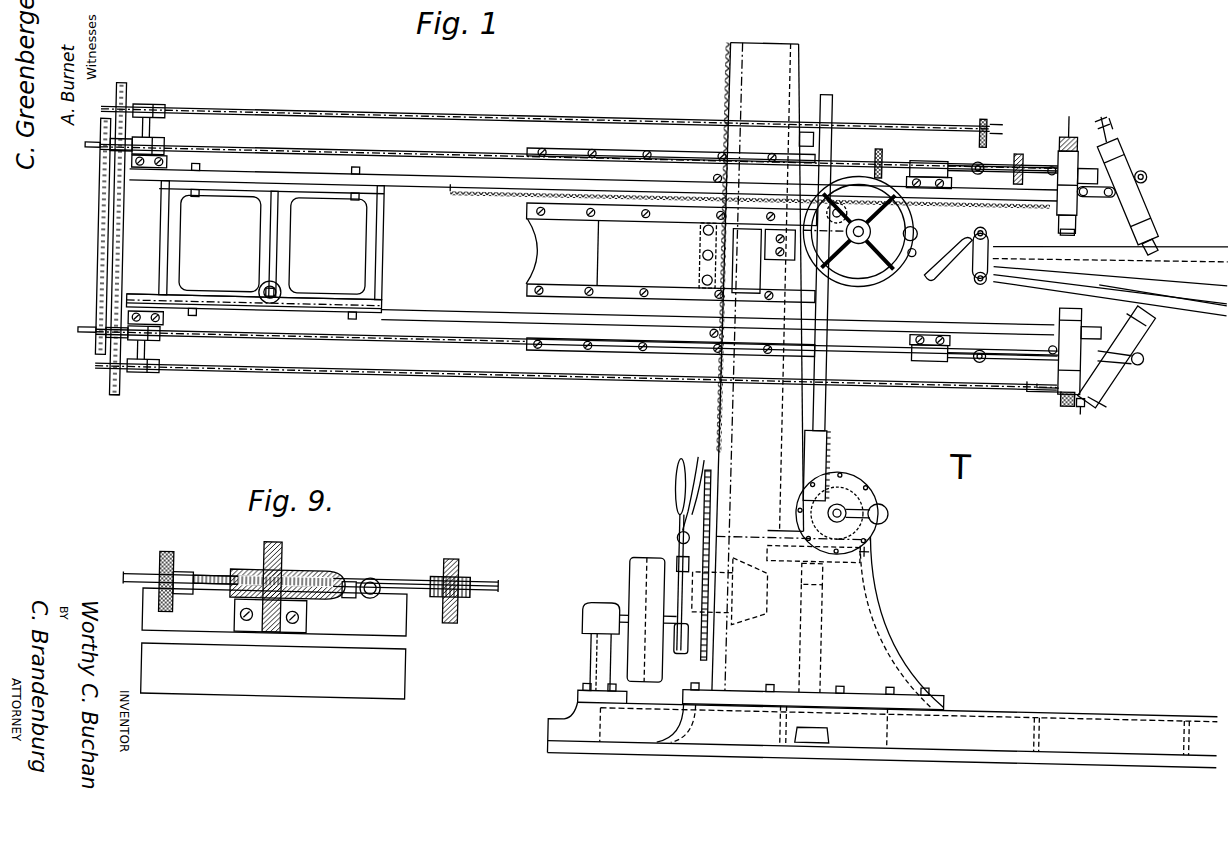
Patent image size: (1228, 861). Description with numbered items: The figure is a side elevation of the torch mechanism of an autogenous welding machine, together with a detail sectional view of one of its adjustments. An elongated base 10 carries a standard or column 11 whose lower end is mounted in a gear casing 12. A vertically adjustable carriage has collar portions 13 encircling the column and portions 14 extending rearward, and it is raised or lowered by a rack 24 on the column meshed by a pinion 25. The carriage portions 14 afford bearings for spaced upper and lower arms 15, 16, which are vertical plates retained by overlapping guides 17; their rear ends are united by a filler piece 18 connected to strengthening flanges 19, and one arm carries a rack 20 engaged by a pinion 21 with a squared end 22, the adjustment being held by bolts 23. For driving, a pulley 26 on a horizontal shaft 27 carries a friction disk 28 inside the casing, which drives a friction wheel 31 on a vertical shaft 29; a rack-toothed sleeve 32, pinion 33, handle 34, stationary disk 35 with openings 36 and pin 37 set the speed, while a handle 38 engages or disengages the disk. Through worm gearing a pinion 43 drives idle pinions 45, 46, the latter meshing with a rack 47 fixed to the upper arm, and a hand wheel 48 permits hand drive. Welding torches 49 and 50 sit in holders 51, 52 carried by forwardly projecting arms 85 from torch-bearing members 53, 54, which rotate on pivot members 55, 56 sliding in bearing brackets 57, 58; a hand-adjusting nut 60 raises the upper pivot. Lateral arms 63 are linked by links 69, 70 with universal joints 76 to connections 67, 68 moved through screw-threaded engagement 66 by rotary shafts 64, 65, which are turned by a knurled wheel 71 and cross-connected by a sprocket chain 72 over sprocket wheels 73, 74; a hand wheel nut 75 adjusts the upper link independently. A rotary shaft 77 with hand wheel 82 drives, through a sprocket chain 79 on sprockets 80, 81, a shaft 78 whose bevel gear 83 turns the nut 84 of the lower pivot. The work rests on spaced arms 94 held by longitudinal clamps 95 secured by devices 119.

In FIG. 1, the base 10 is at (1040, 692).
In FIG. 1, the standard or column 11 is at (797, 72).
In FIG. 1, the gear casing 12 is at (870, 580).
In FIG. 1, the collar portions 13 is at (808, 115).
In FIG. 1, the carriage portions 14 is at (632, 215).
In FIG. 1, the upper horizontal arm 15 is at (424, 193).
In FIG. 9, the upper horizontal arm 15 is at (274, 643).
In FIG. 1, the lower horizontal arm 16 is at (428, 286).
In FIG. 1, the overlapping guides 17 is at (560, 140).
In FIG. 1, the filler piece 18 is at (286, 250).
In FIG. 1, the strengthening flanges 19 is at (449, 187).
In FIG. 1, the rack 20 is at (288, 309).
In FIG. 1, the pinion 21 is at (283, 288).
In FIG. 1, the squared end 22 is at (262, 284).
In FIG. 1, the bolts 23 is at (348, 330).
In FIG. 1, the rack 24 is at (722, 68).
In FIG. 1, the pinion 25 is at (699, 243).
In FIG. 1, the pulley 26 is at (645, 546).
In FIG. 1, the horizontal shaft 27 is at (616, 592).
In FIG. 1, the friction disk 28 is at (776, 615).
In FIG. 1, the vertical shaft 29 is at (831, 394).
In FIG. 1, the friction wheel 31 is at (878, 538).
In FIG. 1, the rack-toothed sleeve 32 is at (836, 441).
In FIG. 1, the pinion 33 is at (846, 490).
In FIG. 1, the handle 34 is at (875, 494).
In FIG. 1, the stationary disk or plate 35 is at (862, 466).
In FIG. 1, the openings 36 is at (870, 482).
In FIG. 1, the pin 37 is at (895, 500).
In FIG. 1, the handle 38 is at (681, 498).
In FIG. 1, the pinion 43 is at (925, 261).
In FIG. 1, the idle pinion 45 is at (816, 243).
In FIG. 1, the idle pinion 46 is at (838, 187).
In FIG. 1, the rack 47 is at (932, 192).
In FIG. 1, the hand wheel 48 is at (914, 237).
In FIG. 1, the welding torch 49 is at (1130, 144).
In FIG. 1, the welding torch 50 is at (1115, 360).
In FIG. 1, the torch holder 51 is at (1146, 155).
In FIG. 1, the torch holder 52 is at (1147, 335).
In FIG. 1, the torch-bearing member 53 is at (1078, 186).
In FIG. 1, the torch-bearing member 54 is at (1100, 314).
In FIG. 1, the pivot member 55 is at (1076, 212).
In FIG. 1, the pivot member 56 is at (1084, 303).
In FIG. 1, the bearing bracket 57 is at (1057, 135).
In FIG. 1, the bearing bracket 58 is at (1036, 374).
In FIG. 1, the hand-adjusting nut 60 is at (1071, 125).
In FIG. 1, the arm 63 is at (1049, 155).
In FIG. 1, the upper rotary shaft 64 is at (438, 146).
In FIG. 9, the upper rotary shaft 64 is at (131, 572).
In FIG. 1, the lower rotary shaft 65 is at (529, 338).
In FIG. 9, the screw-threaded engagement 66 is at (220, 573).
In FIG. 1, the upper connection 67 is at (936, 144).
In FIG. 9, the upper connection 67 is at (325, 567).
In FIG. 1, the lower connection 68 is at (942, 345).
In FIG. 1, the link 69 is at (989, 147).
In FIG. 9, the link 69 is at (406, 575).
In FIG. 1, the link 70 is at (989, 341).
In FIG. 1, the knurled wheel 71 is at (881, 145).
In FIG. 9, the knurled wheel 71 is at (166, 550).
In FIG. 1, the sprocket chain 72 is at (97, 257).
In FIG. 1, the sprocket wheel 73 is at (97, 160).
In FIG. 1, the sprocket wheel 74 is at (96, 350).
In FIG. 1, the hand wheel nut 75 is at (1016, 135).
In FIG. 9, the hand wheel nut 75 is at (458, 558).
In FIG. 1, the universal joints 76 is at (977, 156).
In FIG. 9, the universal joints 76 is at (377, 592).
In FIG. 1, the rotary shaft 77 is at (416, 107).
In FIG. 1, the shaft 78 is at (509, 372).
In FIG. 1, the sprocket chain 79 is at (124, 258).
In FIG. 1, the sprocket 80 is at (122, 104).
In FIG. 1, the sprocket 81 is at (117, 397).
In FIG. 1, the hand wheel 82 is at (980, 100).
In FIG. 1, the bevel gear 83 is at (1066, 386).
In FIG. 1, the nut 84 is at (1072, 412).
In FIG. 1, the forwardly projecting arm 85 is at (1089, 168).
In FIG. 1, the arms 94 is at (1200, 290).
In FIG. 1, the longitudinal clamps 95 is at (1180, 226).
In FIG. 1, the securing devices 119 is at (972, 262).